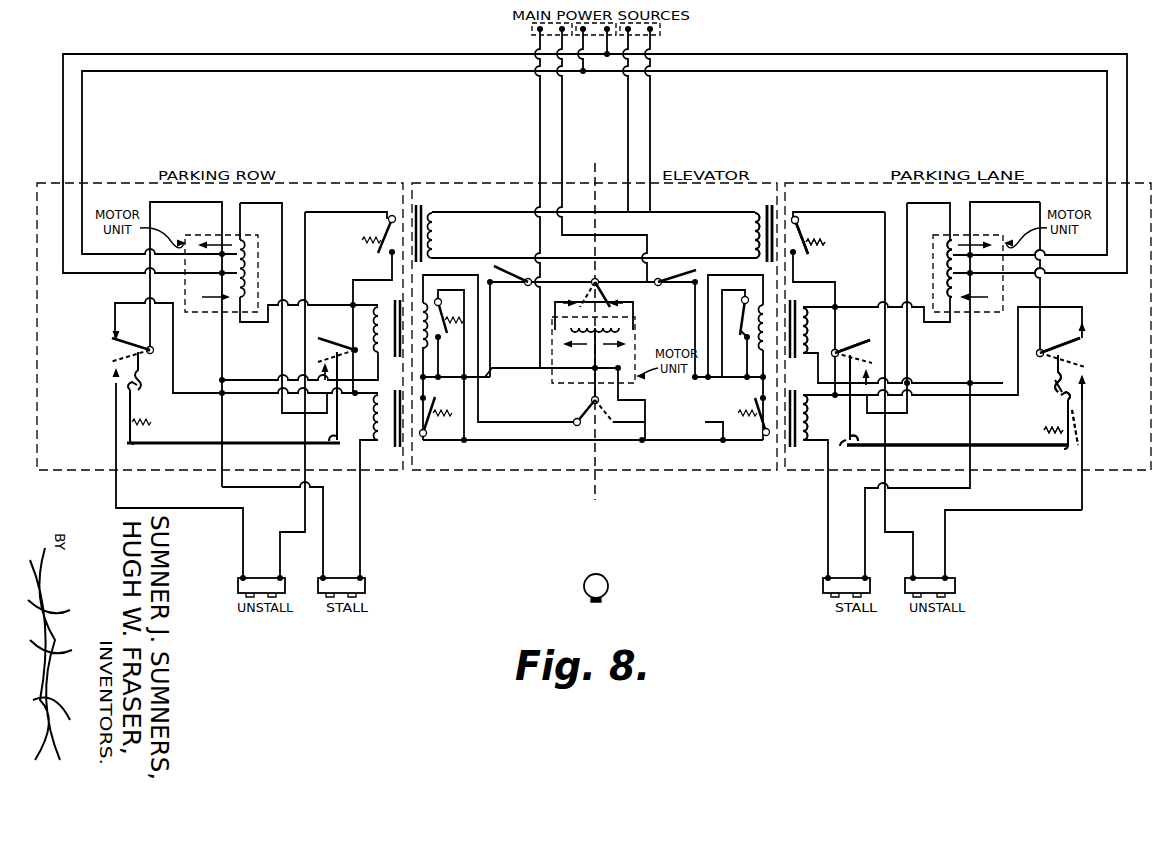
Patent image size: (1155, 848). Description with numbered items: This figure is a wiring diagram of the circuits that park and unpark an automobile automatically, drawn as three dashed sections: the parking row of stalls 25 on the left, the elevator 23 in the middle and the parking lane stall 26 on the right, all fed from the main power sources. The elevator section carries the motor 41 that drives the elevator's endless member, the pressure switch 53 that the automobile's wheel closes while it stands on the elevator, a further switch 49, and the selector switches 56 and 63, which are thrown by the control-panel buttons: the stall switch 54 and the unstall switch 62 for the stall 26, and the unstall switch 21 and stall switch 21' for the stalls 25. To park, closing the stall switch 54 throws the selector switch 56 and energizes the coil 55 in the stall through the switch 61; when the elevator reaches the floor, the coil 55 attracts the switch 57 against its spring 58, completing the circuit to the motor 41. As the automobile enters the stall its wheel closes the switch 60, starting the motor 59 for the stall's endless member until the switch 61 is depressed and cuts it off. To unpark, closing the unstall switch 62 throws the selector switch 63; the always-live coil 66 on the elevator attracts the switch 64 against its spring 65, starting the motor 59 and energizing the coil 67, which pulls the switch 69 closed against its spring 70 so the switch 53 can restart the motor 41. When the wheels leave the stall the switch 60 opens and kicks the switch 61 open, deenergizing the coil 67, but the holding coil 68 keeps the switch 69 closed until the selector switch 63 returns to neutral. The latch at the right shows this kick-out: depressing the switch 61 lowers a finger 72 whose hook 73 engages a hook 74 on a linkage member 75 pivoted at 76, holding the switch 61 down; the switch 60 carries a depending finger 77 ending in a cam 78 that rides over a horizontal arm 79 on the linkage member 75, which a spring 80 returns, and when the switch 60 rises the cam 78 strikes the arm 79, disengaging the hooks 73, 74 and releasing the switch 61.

The unstall switch 21 is at (247, 578).
The stall switch 21' is at (361, 576).
The elevator 23 is at (786, 158).
The parking stalls 25 is at (346, 178).
The parking stall 26 is at (1062, 176).
The motor 41 is at (552, 386).
The limit switch 49 is at (510, 285).
The pressure switch 53 is at (690, 272).
The stall switch 54 is at (823, 585).
The coil 55 is at (812, 430).
The selector switch 56 is at (598, 285).
The switch 57 is at (764, 437).
The spring 58 is at (738, 412).
The motor 59 is at (1025, 291).
The switch 60 is at (852, 347).
The switch 61 is at (1068, 345).
The unstall switch 62 is at (955, 586).
The selector switch 63 is at (580, 418).
The switch 64 is at (804, 232).
The spring 65 is at (822, 244).
The coil 66 is at (757, 236).
The coil 67 is at (815, 330).
The holding coil 68 is at (774, 310).
The switch 69 is at (743, 303).
The spring 70 is at (736, 327).
The finger 72 is at (1058, 380).
The hook 73 is at (1056, 383).
The hook 74 is at (1085, 390).
The linkage member 75 is at (1062, 405).
The pivot 76 is at (1074, 417).
The downwardly depending finger 77 is at (848, 442).
The cam 78 is at (856, 441).
The horizontal arm 79 is at (998, 432).
The spring 80 is at (1043, 432).